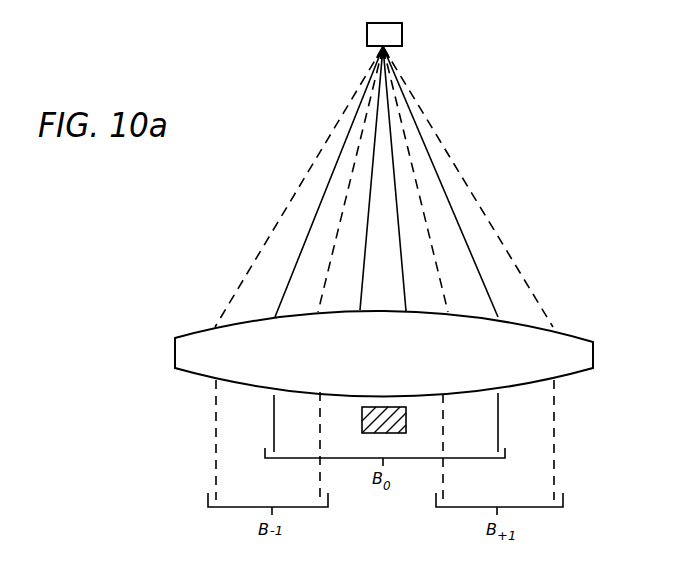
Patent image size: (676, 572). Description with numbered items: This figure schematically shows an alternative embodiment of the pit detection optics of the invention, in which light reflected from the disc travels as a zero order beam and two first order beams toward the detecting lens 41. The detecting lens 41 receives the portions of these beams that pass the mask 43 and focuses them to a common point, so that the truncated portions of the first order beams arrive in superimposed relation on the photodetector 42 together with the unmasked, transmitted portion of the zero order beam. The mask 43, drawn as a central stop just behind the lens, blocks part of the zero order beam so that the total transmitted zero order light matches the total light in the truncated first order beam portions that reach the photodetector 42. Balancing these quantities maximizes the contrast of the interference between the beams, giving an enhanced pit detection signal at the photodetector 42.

The detecting lens 41 is at (584, 342).
The photodetector 42 is at (402, 27).
The mask 43 is at (388, 431).